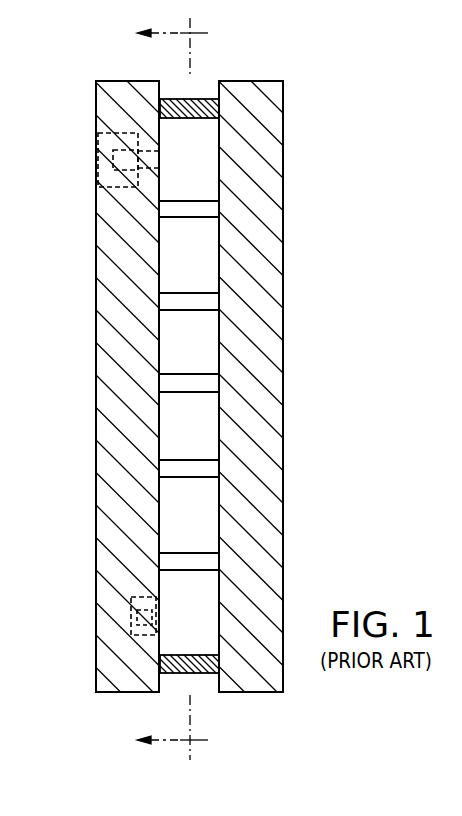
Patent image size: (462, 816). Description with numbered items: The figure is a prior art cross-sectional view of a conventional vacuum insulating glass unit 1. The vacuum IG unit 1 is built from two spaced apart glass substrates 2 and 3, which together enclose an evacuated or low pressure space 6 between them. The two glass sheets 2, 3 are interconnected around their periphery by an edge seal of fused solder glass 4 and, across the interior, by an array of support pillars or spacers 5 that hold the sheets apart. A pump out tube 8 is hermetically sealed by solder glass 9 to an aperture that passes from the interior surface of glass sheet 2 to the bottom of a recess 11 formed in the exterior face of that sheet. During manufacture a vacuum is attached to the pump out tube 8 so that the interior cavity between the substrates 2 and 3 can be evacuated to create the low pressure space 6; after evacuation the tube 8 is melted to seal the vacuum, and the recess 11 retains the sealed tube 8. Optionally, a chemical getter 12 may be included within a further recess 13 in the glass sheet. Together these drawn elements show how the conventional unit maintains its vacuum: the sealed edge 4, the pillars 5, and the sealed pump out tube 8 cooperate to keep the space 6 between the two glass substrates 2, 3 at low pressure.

The vacuum IG unit 1 is at (211, 393).
The glass substrate 2 is at (94, 433).
The glass substrate 3 is at (257, 317).
The edge seal of fused solder glass 4 is at (203, 108).
The support pillars 5 is at (197, 563).
The low pressure space 6 is at (175, 500).
The pump out tube 8 is at (106, 163).
The solder glass 9 is at (125, 147).
The recess 11 is at (109, 190).
The chemical getter 12 is at (130, 609).
The recess 13 is at (133, 645).